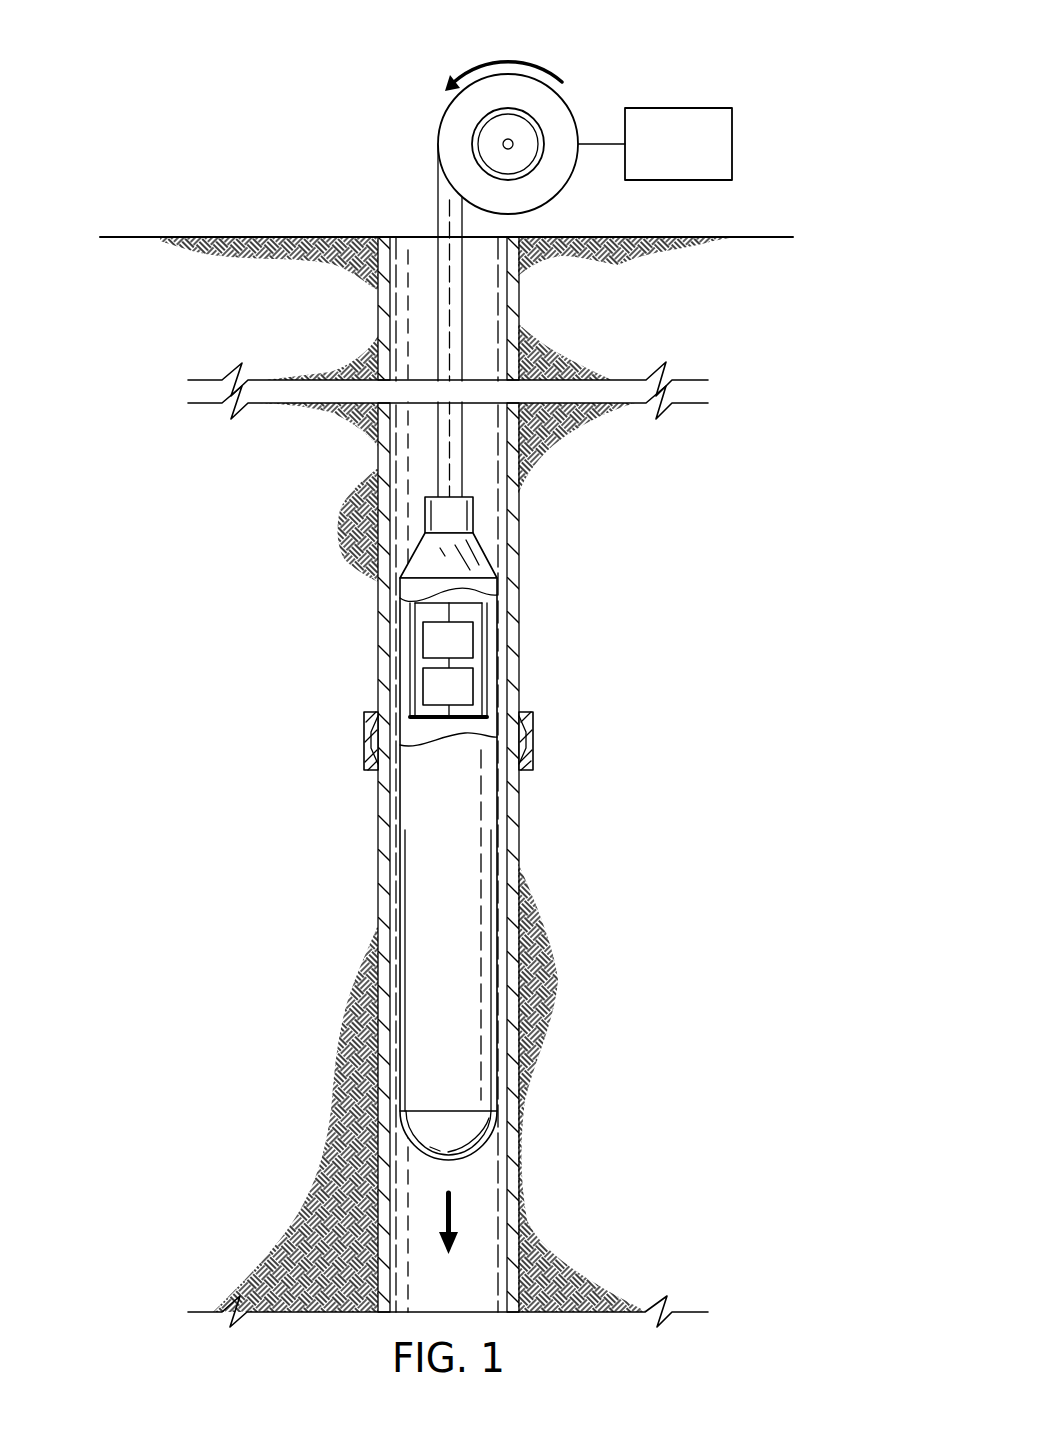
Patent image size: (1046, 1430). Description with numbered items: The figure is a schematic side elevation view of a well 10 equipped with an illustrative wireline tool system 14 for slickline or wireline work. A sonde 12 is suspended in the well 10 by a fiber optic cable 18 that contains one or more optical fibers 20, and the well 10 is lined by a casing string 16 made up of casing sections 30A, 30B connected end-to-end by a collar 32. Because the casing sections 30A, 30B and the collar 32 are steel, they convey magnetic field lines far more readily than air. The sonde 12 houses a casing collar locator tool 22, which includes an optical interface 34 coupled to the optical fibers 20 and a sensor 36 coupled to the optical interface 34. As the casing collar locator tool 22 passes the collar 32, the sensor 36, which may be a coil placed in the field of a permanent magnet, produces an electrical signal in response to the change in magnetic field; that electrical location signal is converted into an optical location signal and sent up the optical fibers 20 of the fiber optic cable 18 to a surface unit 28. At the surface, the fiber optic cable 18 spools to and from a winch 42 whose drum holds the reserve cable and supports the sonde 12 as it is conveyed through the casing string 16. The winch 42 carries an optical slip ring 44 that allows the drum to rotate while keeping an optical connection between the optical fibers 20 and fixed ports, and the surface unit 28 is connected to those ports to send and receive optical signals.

The well 10 is at (398, 195).
The sonde 12 is at (497, 845).
The wireline tool system 14 is at (336, 60).
The casing string 16 is at (583, 334).
The fiber optic cable 18 is at (437, 318).
The optical fiber 20 is at (447, 462).
The casing collar locator tool 22 is at (450, 732).
The surface unit 28 is at (693, 162).
The casing section 30A is at (530, 501).
The casing section 30B is at (533, 1161).
The collar 32 is at (368, 742).
The optical interface 34 is at (462, 637).
The sensor 36 is at (435, 690).
The winch 42 is at (439, 128).
The optical slip ring 44 is at (533, 119).